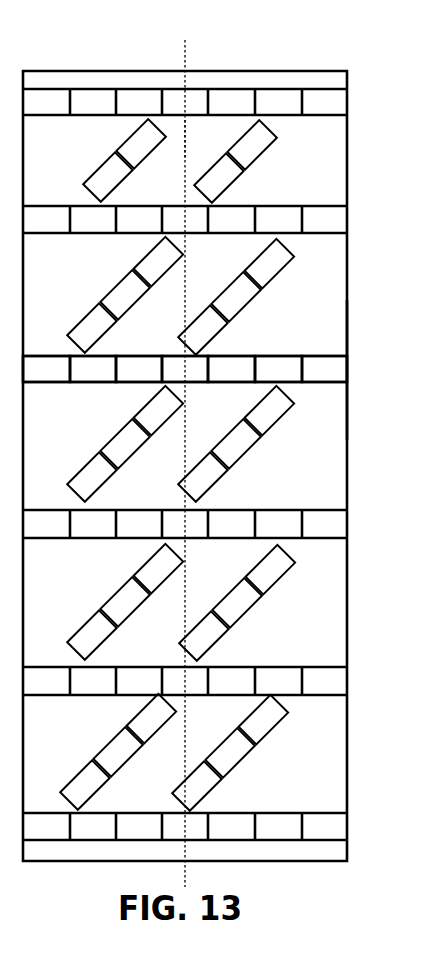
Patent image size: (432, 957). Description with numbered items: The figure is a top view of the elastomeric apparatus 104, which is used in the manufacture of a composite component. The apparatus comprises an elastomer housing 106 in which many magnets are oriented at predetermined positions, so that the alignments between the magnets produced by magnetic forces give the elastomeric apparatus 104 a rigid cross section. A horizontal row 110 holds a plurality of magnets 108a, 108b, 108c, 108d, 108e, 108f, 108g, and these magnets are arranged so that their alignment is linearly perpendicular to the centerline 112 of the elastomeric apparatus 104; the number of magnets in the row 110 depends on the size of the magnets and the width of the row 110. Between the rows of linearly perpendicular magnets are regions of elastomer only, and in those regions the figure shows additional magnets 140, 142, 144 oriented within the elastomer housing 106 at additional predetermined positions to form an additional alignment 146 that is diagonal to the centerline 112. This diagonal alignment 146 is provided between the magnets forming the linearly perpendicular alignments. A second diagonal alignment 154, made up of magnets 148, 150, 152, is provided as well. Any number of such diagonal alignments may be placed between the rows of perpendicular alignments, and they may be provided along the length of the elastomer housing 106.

The elastomeric apparatus 104 is at (178, 34).
The elastomer housing 106 is at (154, 58).
The centerline 112 is at (183, 145).
The magnet 108a is at (53, 371).
The magnet 108b is at (98, 368).
The magnet 108c is at (138, 364).
The magnet 108d is at (188, 373).
The magnet 108e is at (228, 369).
The magnet 108f is at (278, 370).
The magnet 108g is at (318, 366).
The row 110 is at (347, 370).
The additional magnet 140 is at (209, 477).
The additional magnet 142 is at (235, 450).
The additional magnet 144 is at (262, 424).
The additional diagonal alignment 146 is at (237, 482).
The magnet 148 is at (98, 477).
The magnet 150 is at (124, 450).
The magnet 152 is at (150, 424).
The second diagonal alignment 154 is at (120, 482).